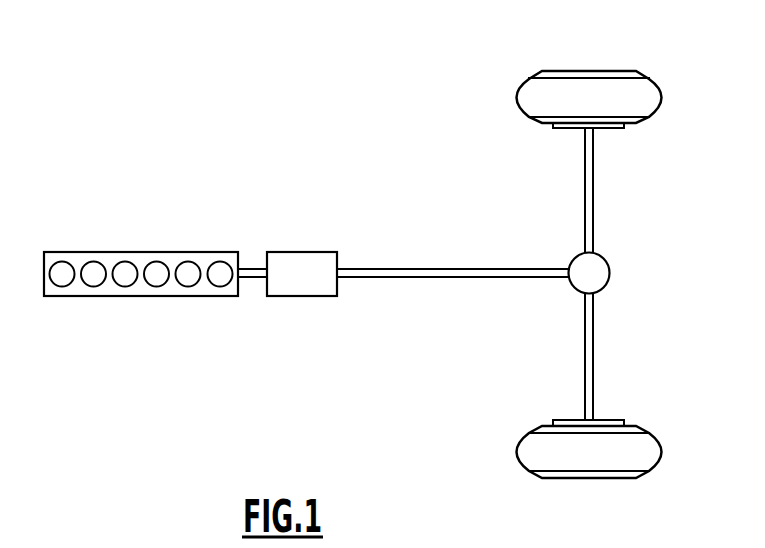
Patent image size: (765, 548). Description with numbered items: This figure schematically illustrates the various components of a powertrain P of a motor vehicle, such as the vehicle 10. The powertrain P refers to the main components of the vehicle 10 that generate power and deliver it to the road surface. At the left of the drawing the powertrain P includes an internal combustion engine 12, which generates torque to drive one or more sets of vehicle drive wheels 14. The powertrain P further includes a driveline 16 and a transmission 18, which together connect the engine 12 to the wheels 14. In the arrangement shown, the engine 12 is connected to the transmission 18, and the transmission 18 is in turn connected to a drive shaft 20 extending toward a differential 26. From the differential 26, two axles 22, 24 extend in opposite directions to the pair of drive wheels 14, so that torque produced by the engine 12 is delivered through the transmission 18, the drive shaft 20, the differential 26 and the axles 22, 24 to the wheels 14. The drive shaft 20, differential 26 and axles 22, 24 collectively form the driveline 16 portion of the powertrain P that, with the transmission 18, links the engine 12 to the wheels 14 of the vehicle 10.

The vehicle 10 is at (353, 274).
The internal combustion engine 12 is at (152, 253).
The powertrain P is at (292, 299).
The transmission 18 is at (300, 253).
The driveline 16 is at (478, 306).
The drive shaft 20 is at (405, 269).
The differential 26 is at (594, 267).
The axle 22 is at (583, 190).
The axle 24 is at (583, 370).
The vehicle drive wheels 14 is at (602, 90).